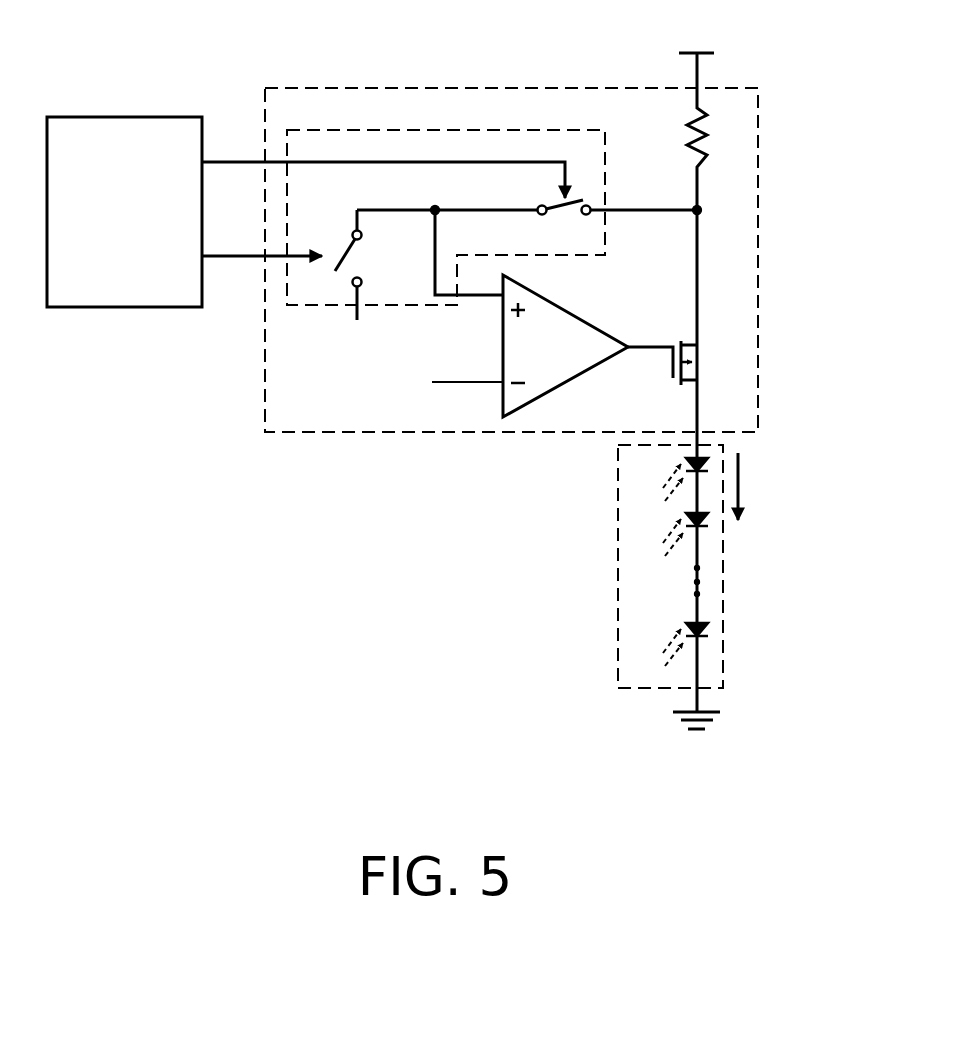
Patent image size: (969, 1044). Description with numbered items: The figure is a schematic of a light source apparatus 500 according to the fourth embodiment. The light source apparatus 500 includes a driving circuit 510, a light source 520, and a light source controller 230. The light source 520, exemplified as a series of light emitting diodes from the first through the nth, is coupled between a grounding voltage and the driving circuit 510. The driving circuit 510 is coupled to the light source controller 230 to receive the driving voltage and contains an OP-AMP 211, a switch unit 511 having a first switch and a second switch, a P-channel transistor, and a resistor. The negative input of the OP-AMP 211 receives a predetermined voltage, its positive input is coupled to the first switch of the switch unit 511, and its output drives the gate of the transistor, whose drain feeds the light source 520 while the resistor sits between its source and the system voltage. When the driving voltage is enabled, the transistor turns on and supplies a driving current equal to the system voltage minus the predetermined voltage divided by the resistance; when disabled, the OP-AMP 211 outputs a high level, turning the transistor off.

The light source apparatus 500 is at (460, 393).
The driving circuit 510 is at (822, 227).
The switch unit 511 is at (410, 128).
The light source 520 is at (729, 566).
The light source controller 230 is at (150, 368).
The OP-AMP 211 is at (611, 284).